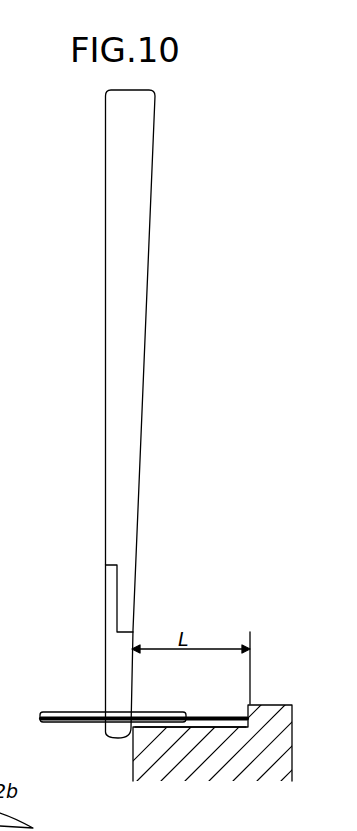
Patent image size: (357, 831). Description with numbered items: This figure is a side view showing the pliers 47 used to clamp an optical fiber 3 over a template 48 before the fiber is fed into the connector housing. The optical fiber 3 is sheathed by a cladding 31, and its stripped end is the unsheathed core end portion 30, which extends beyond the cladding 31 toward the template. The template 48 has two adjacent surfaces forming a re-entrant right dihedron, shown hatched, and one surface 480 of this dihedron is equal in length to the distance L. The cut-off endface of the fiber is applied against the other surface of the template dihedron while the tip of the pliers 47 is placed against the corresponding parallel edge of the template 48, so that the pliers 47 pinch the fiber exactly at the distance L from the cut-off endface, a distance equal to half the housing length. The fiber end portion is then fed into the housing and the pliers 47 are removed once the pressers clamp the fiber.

The pliers 47 is at (145, 255).
The optical fiber 3 is at (143, 699).
The cladding 31 is at (153, 698).
The core end portion 30 is at (212, 716).
The template 48 is at (273, 706).
The template dihedron surface 480 is at (219, 729).